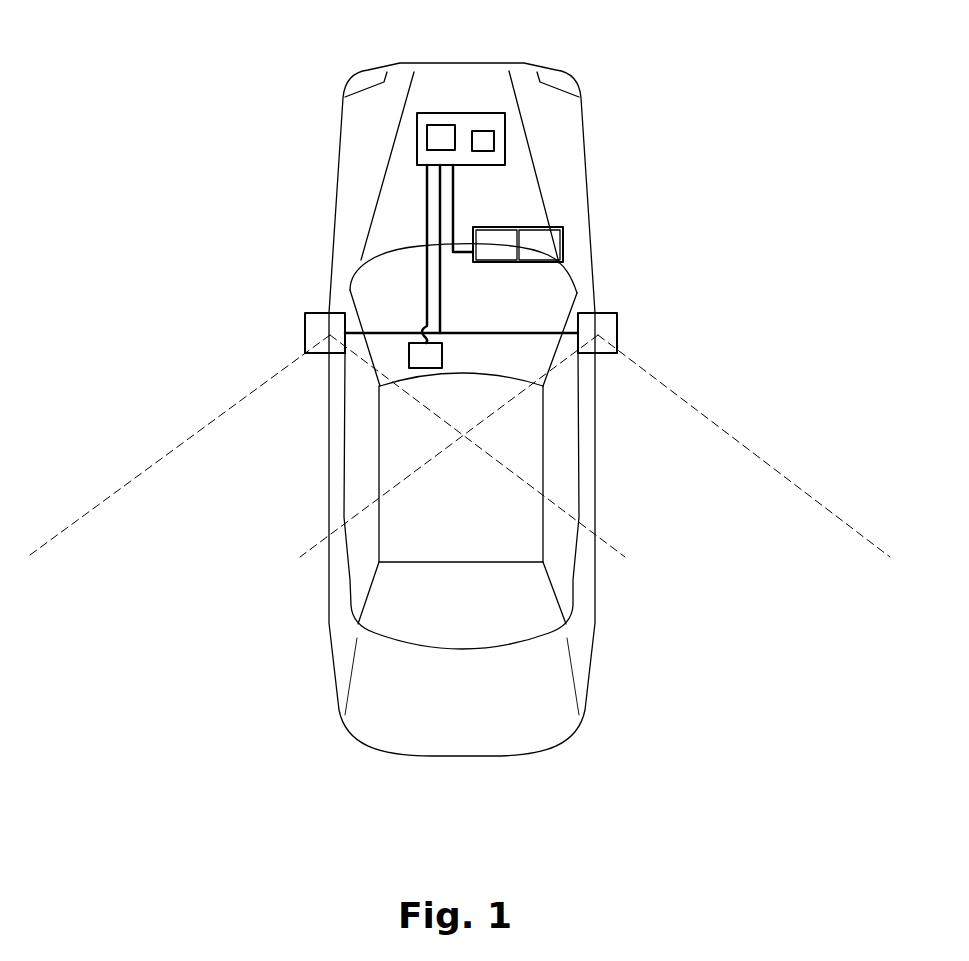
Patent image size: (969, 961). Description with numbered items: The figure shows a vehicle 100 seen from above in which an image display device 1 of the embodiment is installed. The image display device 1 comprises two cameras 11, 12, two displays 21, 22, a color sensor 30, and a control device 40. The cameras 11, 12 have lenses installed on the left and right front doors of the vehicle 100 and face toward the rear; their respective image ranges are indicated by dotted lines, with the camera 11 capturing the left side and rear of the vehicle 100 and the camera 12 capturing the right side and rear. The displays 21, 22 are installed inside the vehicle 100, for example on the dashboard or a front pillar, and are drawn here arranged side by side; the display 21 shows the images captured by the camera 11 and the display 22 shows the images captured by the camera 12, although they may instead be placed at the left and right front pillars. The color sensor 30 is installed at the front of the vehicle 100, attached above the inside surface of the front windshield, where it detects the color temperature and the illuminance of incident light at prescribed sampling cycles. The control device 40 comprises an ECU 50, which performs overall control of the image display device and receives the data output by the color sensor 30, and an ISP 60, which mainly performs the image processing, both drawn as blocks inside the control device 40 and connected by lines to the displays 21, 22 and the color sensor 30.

The image display device 1 is at (508, 127).
The camera 11 is at (321, 334).
The camera 12 is at (604, 328).
The display 21 is at (484, 242).
The display 22 is at (553, 240).
The color sensor 30 is at (442, 356).
The control device 40 is at (461, 177).
The ECU 50 is at (432, 125).
The ISP 60 is at (493, 131).
The vehicle 100 is at (338, 161).